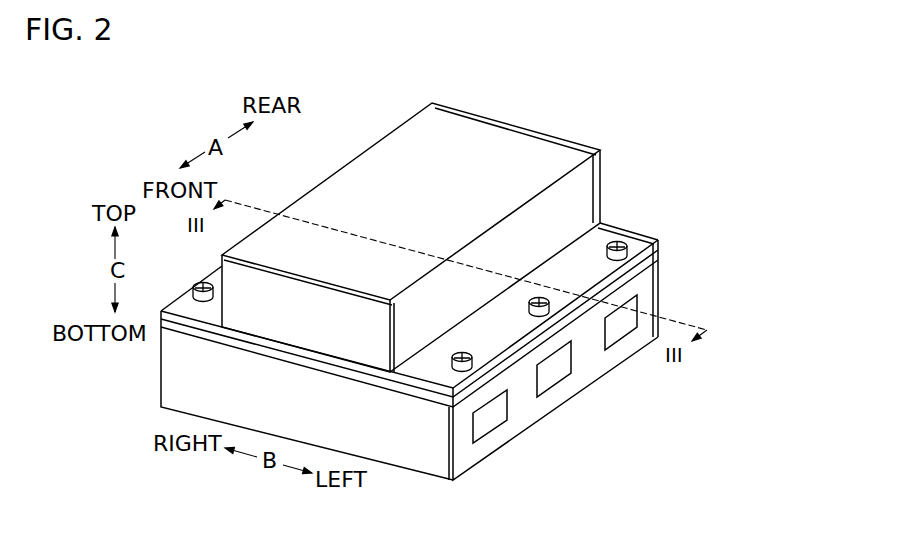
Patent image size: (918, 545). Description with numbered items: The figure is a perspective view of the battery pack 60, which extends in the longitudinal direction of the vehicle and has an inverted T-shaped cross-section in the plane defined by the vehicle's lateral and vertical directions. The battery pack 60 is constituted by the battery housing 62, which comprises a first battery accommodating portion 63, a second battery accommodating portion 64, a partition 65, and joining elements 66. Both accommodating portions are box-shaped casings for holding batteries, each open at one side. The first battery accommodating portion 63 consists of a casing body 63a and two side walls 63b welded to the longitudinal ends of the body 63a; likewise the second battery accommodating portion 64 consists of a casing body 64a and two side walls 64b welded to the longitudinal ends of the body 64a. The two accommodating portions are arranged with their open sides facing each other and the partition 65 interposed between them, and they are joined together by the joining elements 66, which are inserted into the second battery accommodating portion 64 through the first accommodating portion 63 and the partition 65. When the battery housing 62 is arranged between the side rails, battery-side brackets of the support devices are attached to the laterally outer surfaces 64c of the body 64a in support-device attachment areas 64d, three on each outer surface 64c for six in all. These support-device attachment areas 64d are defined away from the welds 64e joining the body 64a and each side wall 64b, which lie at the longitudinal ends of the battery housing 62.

The battery pack 60 is at (607, 420).
The battery housing 62 is at (767, 95).
The first battery accommodating portion 63 is at (727, 83).
The casing body 63a is at (598, 195).
The side walls 63b is at (582, 190).
The second battery accommodating portion 64 is at (727, 225).
The casing body 64a is at (659, 242).
The side walls 64b is at (661, 300).
The laterally outer surfaces 64c is at (594, 372).
The support-device attachment areas 64d is at (498, 427).
The welds 64e is at (456, 484).
The partition 65 is at (645, 235).
The joining elements 66 is at (625, 230).